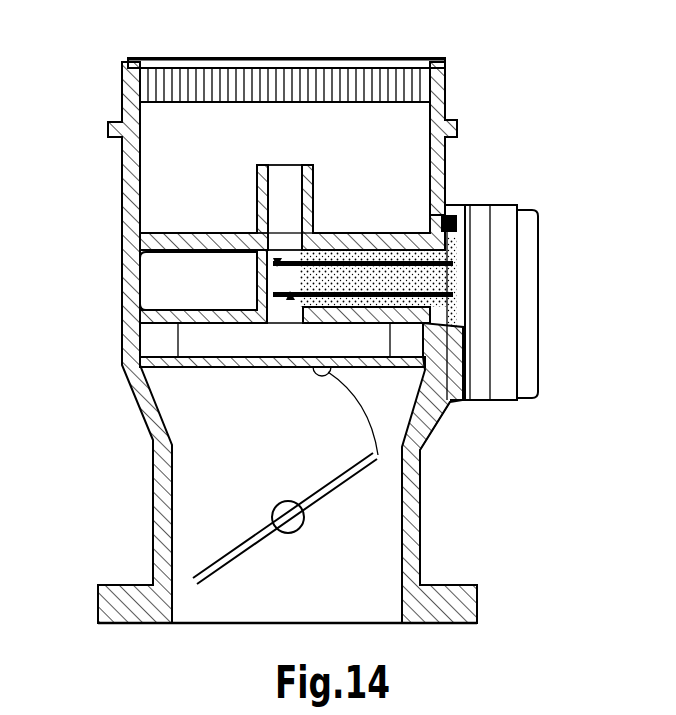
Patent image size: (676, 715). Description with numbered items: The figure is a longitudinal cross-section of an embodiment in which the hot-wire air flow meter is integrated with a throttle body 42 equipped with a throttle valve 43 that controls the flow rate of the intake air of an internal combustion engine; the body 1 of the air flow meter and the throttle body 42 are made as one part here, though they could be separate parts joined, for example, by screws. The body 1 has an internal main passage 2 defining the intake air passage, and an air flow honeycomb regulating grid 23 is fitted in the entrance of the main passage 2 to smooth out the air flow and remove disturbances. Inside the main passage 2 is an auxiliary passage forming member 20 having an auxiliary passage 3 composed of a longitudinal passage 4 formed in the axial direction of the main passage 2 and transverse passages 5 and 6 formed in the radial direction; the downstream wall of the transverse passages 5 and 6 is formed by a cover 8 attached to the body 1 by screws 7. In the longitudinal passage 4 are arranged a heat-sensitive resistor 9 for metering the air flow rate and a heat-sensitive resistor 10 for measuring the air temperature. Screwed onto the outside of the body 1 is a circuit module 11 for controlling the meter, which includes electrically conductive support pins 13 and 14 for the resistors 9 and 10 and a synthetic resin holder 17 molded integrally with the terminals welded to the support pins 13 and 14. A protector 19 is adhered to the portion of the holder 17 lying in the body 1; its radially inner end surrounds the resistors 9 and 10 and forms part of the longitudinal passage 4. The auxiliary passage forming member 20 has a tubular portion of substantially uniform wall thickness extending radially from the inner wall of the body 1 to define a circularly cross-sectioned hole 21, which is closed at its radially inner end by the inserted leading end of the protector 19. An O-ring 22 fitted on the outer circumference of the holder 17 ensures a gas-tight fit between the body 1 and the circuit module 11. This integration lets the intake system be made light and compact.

The body 1 is at (122, 80).
The main passage 2 is at (157, 146).
The auxiliary passage 3 is at (293, 177).
The longitudinal passage 4 is at (293, 177).
The transverse passage 5 is at (187, 342).
The transverse passage 6 is at (418, 440).
The screws 7 is at (418, 500).
The cover 8 is at (203, 370).
The heat-sensitive resistor 9 is at (257, 228).
The heat-sensitive resistor 10 is at (278, 262).
The circuit module 11 is at (537, 207).
The support pin 13 is at (358, 250).
The support pin 14 is at (453, 402).
The synthetic resin holder 17 is at (445, 277).
The protector 19 is at (262, 285).
The auxiliary passage forming member 20 is at (262, 230).
The hole 21 is at (165, 262).
The O-ring 22 is at (452, 225).
The air flow honeycomb regulating grid 23 is at (155, 58).
The throttle body 42 is at (132, 393).
The throttle valve 43 is at (230, 557).